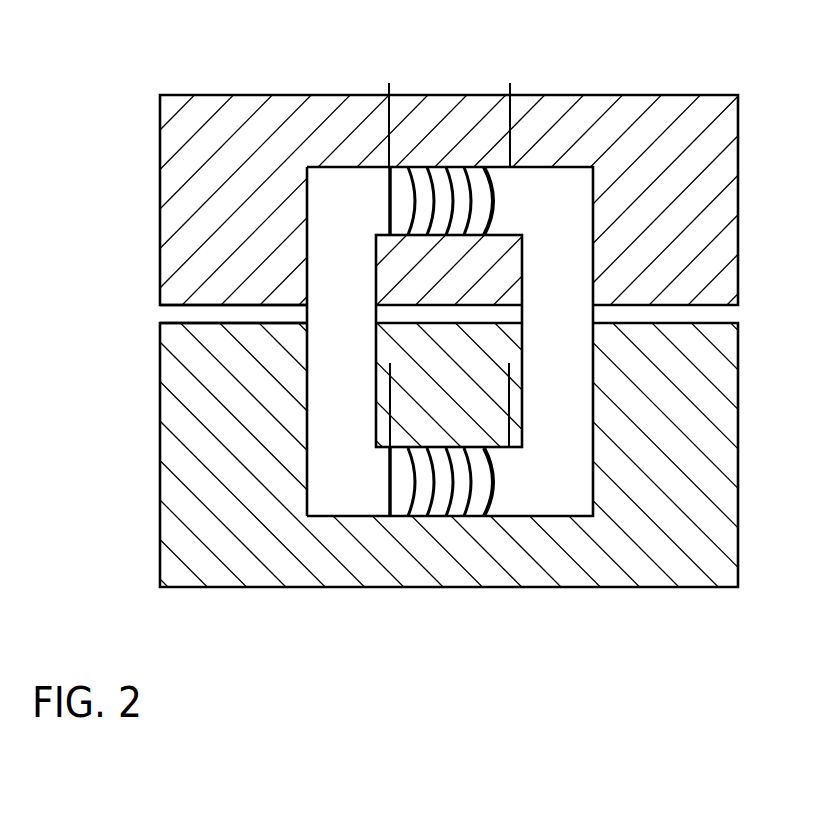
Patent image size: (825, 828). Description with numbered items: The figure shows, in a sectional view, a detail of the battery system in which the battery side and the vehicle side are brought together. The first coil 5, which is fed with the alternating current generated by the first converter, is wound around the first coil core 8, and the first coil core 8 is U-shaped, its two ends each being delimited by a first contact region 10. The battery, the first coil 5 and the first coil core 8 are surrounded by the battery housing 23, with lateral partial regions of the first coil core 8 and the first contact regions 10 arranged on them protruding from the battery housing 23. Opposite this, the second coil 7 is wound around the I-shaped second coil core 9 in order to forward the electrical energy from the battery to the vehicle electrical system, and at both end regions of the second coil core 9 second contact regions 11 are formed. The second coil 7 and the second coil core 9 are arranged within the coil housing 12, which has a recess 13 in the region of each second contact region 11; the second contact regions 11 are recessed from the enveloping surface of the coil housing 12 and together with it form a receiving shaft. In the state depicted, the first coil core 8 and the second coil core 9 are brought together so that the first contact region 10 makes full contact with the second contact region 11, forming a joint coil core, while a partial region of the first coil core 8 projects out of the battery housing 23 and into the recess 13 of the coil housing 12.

The first coil 5 is at (443, 483).
The second coil 7 is at (475, 146).
The first coil core 8 is at (563, 399).
The second coil core 9 is at (553, 191).
The first contact region 10 is at (327, 215).
The second contact region 11 is at (332, 248).
The coil housing 12 is at (637, 238).
The recess 13 is at (283, 269).
The battery housing 23 is at (646, 360).